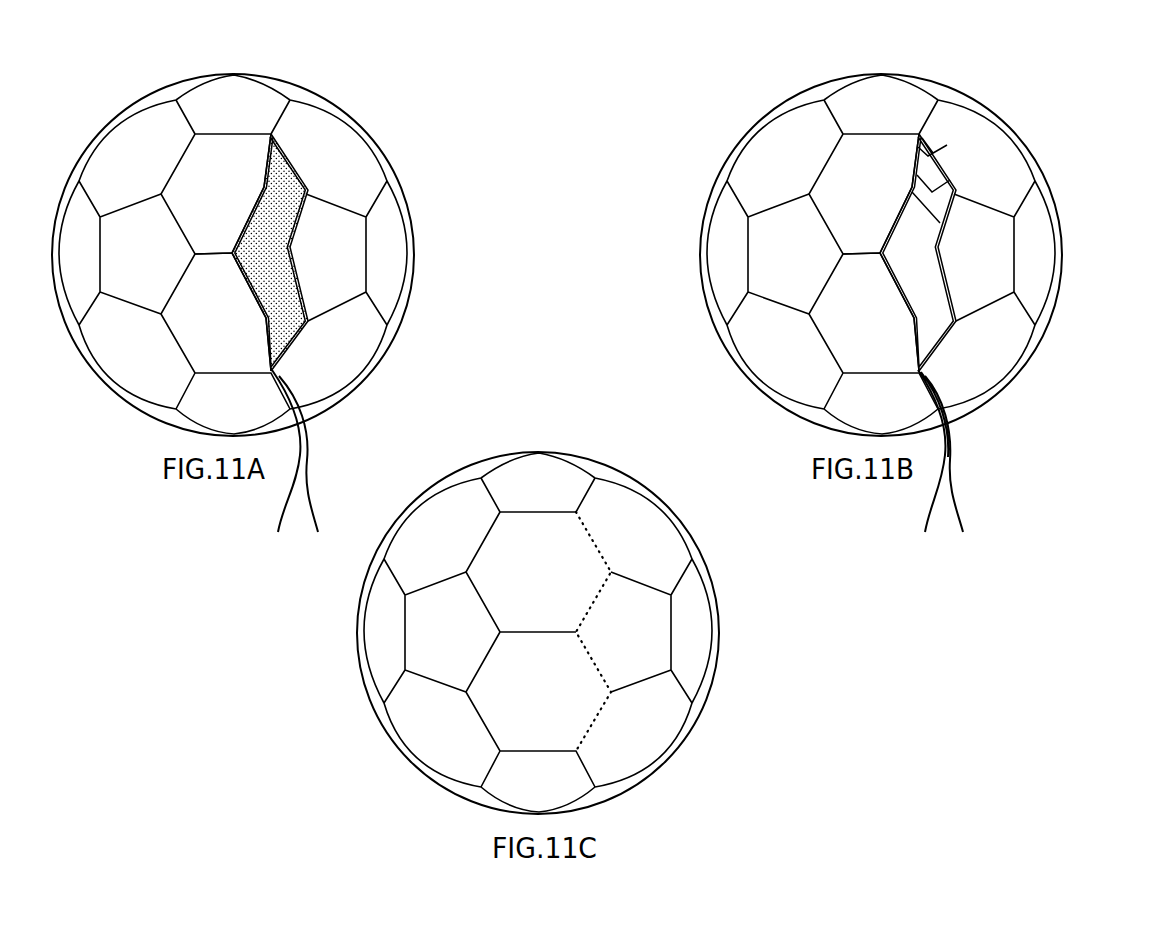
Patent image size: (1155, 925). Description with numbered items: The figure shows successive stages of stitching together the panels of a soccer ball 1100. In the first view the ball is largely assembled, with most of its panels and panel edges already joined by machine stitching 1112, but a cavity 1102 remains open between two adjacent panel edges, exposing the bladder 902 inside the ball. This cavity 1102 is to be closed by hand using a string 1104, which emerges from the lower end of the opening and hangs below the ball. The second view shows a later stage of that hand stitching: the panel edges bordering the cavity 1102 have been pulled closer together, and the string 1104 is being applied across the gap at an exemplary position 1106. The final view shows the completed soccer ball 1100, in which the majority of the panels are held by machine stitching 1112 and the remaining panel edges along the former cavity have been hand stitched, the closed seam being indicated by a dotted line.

In FIG. 11A, the soccer ball 1100 is at (352, 124).
In FIG. 11B, the soccer ball 1100 is at (1002, 124).
In FIG. 11C, the soccer ball 1100 is at (538, 633).
In FIG. 11A, the cavity 1102 is at (307, 288).
In FIG. 11A, the bladder 902 is at (312, 318).
In FIG. 11A, the string 1104 is at (307, 488).
In FIG. 11B, the string 1104 is at (950, 490).
In FIG. 11B, the exemplary position 1106 is at (923, 290).
In FIG. 11A, the machine stitching 1112 is at (181, 222).
In FIG. 11B, the machine stitching 1112 is at (864, 194).
In FIG. 11C, the machine stitching 1112 is at (510, 630).